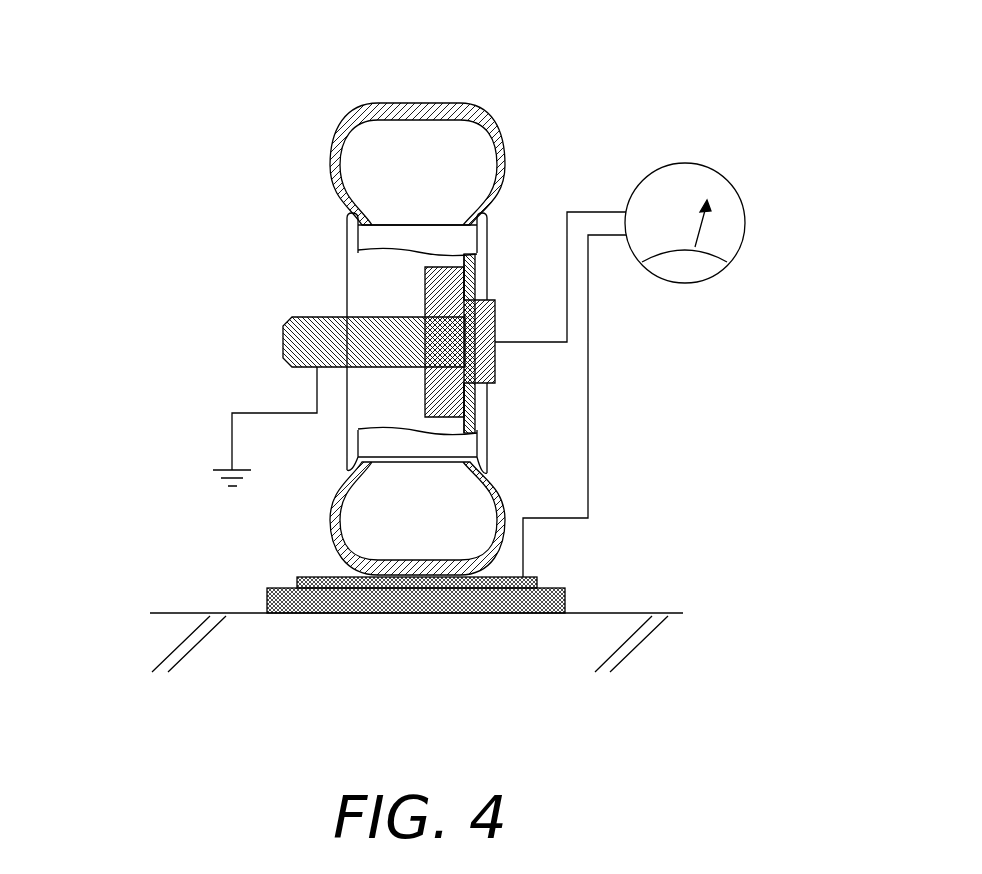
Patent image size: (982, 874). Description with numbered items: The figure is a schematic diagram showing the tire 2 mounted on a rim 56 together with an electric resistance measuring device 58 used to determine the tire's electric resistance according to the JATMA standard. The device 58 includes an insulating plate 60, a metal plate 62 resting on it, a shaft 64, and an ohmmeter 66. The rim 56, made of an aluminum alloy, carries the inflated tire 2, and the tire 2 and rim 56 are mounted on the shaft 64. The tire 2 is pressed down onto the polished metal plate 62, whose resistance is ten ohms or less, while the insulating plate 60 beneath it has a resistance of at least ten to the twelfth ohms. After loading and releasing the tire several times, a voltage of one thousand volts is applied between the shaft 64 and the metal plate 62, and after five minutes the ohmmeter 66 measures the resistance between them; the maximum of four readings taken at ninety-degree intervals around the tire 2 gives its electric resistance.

The tire 2 is at (442, 103).
The rim 56 is at (348, 237).
The shaft 64 is at (302, 317).
The electric resistance measuring device 58 is at (598, 396).
The ohmmeter 66 is at (684, 162).
The metal plate 62 is at (315, 575).
The insulating plate 60 is at (550, 577).